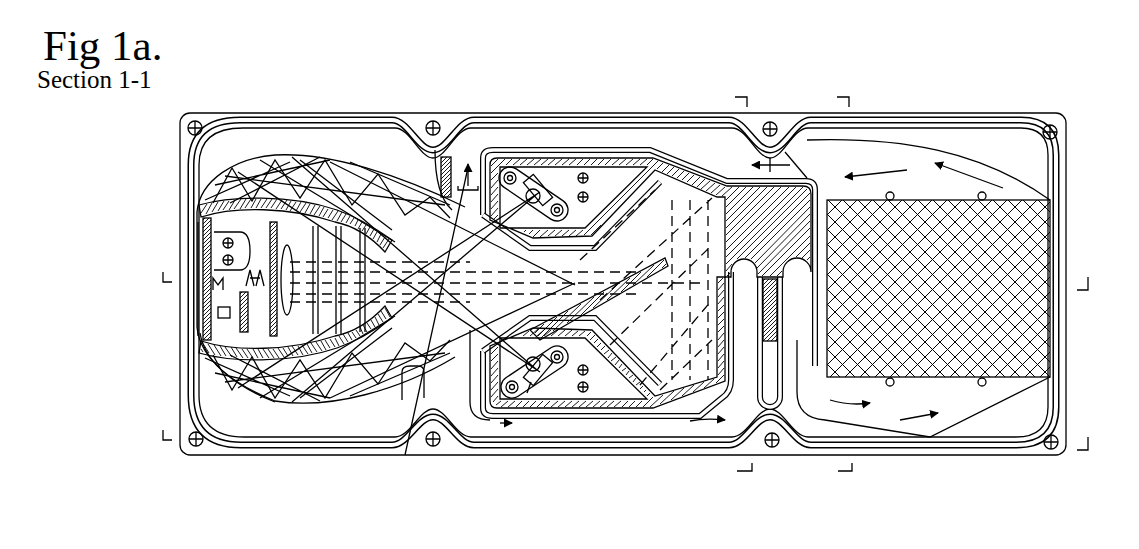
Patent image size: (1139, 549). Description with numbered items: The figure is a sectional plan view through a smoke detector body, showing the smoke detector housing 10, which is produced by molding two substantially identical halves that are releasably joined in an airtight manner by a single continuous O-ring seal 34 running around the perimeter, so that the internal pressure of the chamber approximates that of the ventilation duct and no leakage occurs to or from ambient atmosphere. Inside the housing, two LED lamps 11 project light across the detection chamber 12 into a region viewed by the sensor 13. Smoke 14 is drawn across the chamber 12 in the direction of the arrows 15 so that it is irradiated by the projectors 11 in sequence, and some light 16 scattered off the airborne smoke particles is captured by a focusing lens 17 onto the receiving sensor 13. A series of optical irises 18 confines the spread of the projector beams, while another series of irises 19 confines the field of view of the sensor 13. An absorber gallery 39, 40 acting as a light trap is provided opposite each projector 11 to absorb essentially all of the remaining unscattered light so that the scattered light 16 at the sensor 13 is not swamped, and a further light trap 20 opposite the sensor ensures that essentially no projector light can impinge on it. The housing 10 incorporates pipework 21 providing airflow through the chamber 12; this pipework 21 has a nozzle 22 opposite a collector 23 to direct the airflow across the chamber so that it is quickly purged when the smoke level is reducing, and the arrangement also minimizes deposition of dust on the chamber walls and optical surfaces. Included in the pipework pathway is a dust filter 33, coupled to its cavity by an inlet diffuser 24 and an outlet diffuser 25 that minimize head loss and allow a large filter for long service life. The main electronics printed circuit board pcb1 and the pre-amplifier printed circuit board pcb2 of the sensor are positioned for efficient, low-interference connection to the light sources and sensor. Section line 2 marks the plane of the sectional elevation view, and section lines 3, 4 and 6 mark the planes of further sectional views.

The section line 2— 2 is at (623, 269).
The section line 3- 3 is at (743, 288).
The section line 4- 4 is at (843, 288).
The section line 6- 6 is at (624, 429).
The smoke detector housing 10 is at (459, 100).
The LED lamp 11 is at (540, 190).
The detection chamber 12 is at (422, 250).
The sensor 13 is at (220, 284).
The smoke 14 is at (805, 360).
The arrows 15 is at (543, 262).
The scattered light 16 is at (413, 415).
The focusing lens 17 is at (270, 270).
The optical irises 18 is at (466, 162).
The irises 19 is at (317, 408).
The further light trap 20 is at (682, 316).
The pipework 21 is at (600, 440).
The nozzle 22 is at (445, 180).
The collector 23 is at (468, 395).
The inlet diffuser 24 is at (900, 410).
The outlet diffuser 25 is at (920, 176).
The dust filter 33 is at (1025, 238).
The O-ring seal 34 is at (345, 117).
The absorber gallery 39 is at (222, 372).
The absorber gallery 40 is at (228, 200).
The main electronics printed circuit board pcb1 is at (695, 7).
The pre-amplifier printed circuit board pcb2 is at (205, 330).